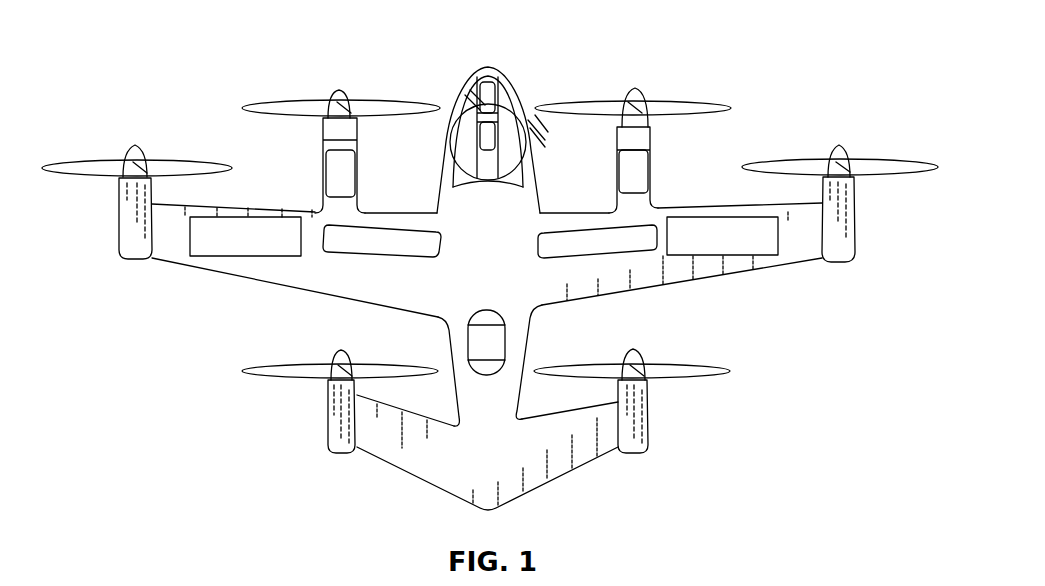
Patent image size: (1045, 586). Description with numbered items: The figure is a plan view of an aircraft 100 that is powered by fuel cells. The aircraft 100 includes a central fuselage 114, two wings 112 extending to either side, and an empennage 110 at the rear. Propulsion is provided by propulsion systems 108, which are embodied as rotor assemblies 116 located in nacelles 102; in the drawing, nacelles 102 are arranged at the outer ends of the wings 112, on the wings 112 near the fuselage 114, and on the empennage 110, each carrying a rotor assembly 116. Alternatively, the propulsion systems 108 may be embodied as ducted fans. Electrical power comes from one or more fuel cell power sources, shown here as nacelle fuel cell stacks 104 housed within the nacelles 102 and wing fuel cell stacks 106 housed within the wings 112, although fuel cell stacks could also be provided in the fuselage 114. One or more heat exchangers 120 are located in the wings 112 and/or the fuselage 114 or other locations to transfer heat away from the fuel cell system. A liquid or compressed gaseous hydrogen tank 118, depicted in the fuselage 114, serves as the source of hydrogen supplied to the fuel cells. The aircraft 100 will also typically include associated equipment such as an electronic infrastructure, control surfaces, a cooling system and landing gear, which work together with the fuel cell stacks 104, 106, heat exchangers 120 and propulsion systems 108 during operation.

The aircraft 100 is at (489, 282).
The nacelle 102 is at (133, 213).
The nacelle fuel cell stack 104 is at (333, 182).
The wing fuel cell stack 106 is at (323, 252).
The propulsion system 108 is at (633, 117).
The empennage 110 is at (392, 448).
The wing 112 is at (262, 272).
The fuselage 114 is at (440, 316).
The rotor assembly 116 is at (131, 148).
The hydrogen tank 118 is at (505, 337).
The heat exchanger 120 is at (205, 258).